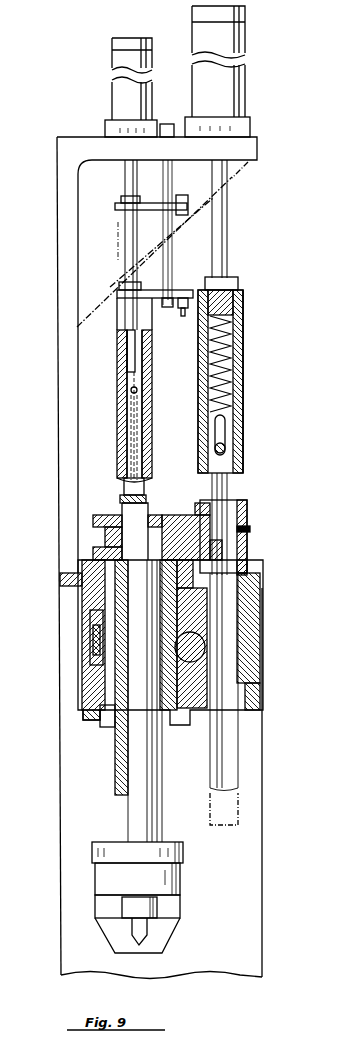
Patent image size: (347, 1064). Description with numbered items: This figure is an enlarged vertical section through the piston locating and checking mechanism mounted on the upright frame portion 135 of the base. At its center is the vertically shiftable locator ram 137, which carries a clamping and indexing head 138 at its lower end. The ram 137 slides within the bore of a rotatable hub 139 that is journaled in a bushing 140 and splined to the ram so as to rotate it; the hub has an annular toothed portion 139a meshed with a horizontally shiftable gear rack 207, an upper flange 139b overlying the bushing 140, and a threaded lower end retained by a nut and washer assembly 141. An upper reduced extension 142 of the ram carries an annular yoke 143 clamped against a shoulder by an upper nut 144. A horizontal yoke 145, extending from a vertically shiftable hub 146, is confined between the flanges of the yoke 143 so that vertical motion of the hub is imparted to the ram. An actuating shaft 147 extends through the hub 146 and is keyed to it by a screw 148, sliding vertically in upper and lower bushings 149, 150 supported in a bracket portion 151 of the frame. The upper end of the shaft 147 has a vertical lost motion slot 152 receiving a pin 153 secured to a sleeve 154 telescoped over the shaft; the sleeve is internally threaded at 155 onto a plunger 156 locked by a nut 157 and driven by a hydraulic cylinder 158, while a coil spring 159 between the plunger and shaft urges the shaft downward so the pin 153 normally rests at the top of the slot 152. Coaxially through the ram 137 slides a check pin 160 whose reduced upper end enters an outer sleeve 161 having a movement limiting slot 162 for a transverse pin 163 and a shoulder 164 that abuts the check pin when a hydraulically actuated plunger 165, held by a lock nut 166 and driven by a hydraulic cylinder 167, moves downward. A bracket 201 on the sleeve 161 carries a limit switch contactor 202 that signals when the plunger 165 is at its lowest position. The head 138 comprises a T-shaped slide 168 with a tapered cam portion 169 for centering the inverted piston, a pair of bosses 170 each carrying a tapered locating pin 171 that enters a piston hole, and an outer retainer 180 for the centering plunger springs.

The upright frame portion 135 is at (67, 603).
The locator ram 137 is at (115, 768).
The clamping and indexing head 138 is at (188, 878).
The rotatable hub 139 is at (95, 615).
The annular gear or toothed portion 139a is at (95, 640).
The upper flange 139b is at (80, 565).
The bushing 140 is at (85, 680).
The nut and washer assembly 141 is at (92, 728).
The upper reduced extension 142 is at (96, 521).
The annular yoke 143 is at (106, 541).
The upper nut 144 is at (122, 505).
The horizontal yoke 145 is at (180, 530).
The vertically shiftable hub 146 is at (247, 513).
The actuating shaft 147 is at (228, 480).
The screw 148 is at (250, 529).
The upper bushing 149 is at (247, 568).
The lower bushing 150 is at (240, 688).
The bracket portion 151 is at (260, 592).
The vertical lost motion slot 152 is at (225, 428).
The vertically shiftable pin 153 is at (225, 450).
The sleeve 154 is at (243, 340).
The internal threads 155 is at (236, 310).
The plunger 156 is at (228, 202).
The nut 157 is at (236, 280).
The vertical hydraulic cylinder 158 is at (240, 66).
The coil spring 159 is at (232, 326).
The check pin 160 is at (122, 478).
The outer sleeve 161 is at (118, 414).
The movement limiting slot 162 is at (142, 420).
The pin 163 is at (137, 390).
The shoulder 164 is at (128, 378).
The hydraulically actuated plunger 165 is at (130, 243).
The lock nut 166 is at (118, 288).
The hydraulic cylinder 167 is at (120, 86).
The slide 168 is at (105, 905).
The tapered cam portion 169 is at (108, 928).
The bosses 170 is at (157, 908).
The locating pin 171 is at (145, 930).
The outer retainer 180 is at (182, 853).
The bracket 201 is at (158, 202).
The limit switch contactor 202 is at (183, 318).
The gear rack 207 is at (200, 650).